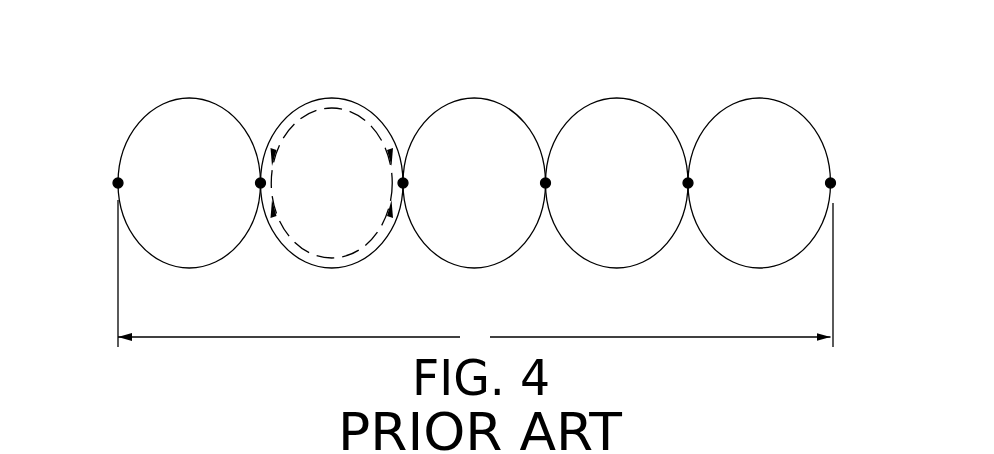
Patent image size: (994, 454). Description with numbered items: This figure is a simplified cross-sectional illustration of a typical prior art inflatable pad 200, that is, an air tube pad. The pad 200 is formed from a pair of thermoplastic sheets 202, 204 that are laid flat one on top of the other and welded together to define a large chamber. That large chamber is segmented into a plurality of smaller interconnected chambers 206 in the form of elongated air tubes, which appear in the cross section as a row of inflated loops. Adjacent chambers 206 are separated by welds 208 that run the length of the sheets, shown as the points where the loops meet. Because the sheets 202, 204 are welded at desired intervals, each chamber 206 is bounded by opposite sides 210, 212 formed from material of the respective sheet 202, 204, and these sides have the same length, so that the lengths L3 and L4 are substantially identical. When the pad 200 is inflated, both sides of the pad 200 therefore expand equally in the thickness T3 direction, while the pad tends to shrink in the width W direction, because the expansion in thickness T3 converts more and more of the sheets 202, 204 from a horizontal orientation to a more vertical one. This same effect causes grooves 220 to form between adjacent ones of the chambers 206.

The inflatable pad 200 is at (327, 164).
The thermoplastic sheet 202 is at (500, 102).
The thermoplastic sheet 204 is at (497, 270).
The interconnected chamber 206 is at (189, 111).
The weld 208 is at (118, 183).
The chamber side 210 is at (290, 114).
The chamber side 212 is at (303, 262).
The groove 220 is at (408, 110).
The thickness T3 is at (332, 98).
The length L3 is at (332, 114).
The length L4 is at (332, 303).
The width W is at (475, 275).